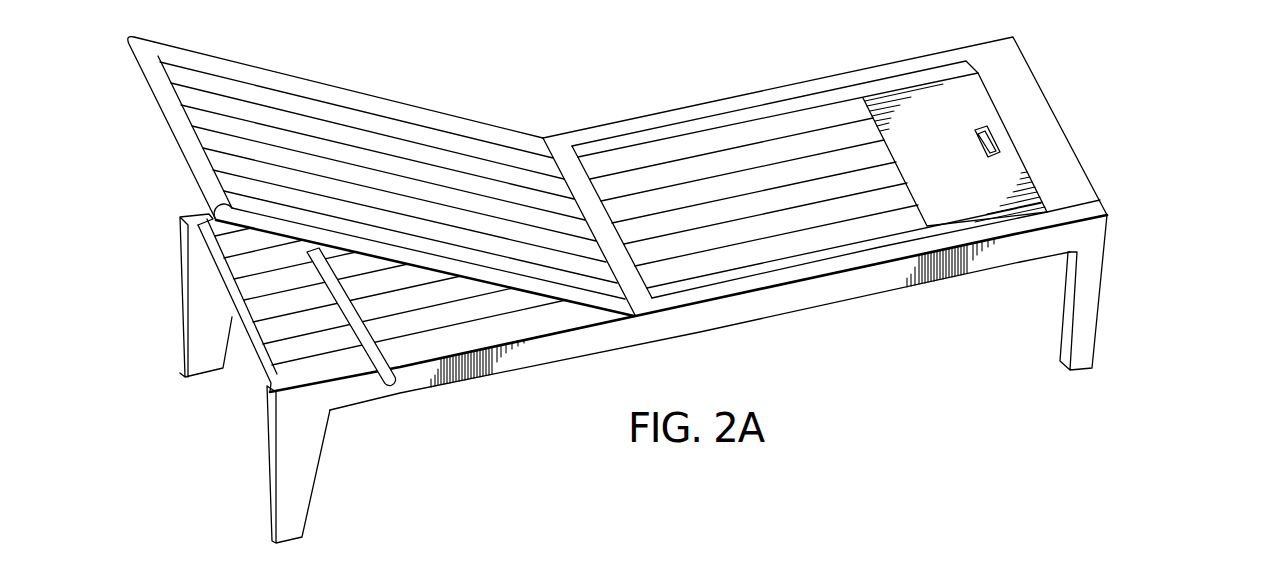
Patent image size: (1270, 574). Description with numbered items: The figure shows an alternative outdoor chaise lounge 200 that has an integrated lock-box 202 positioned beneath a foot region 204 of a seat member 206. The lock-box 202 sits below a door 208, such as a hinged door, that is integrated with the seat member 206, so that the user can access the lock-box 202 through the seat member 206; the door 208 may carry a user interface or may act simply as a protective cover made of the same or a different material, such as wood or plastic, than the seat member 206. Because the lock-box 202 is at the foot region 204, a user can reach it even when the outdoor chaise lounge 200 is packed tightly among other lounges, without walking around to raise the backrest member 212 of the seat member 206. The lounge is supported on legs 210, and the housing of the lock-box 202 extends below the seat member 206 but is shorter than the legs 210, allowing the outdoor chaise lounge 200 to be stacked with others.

The outdoor chaise lounge 200 is at (1190, 190).
The lock-box 202 is at (1041, 146).
The foot region 204 is at (1059, 52).
The seat member 206 is at (745, 132).
The door 208 is at (975, 112).
The legs 210 is at (178, 293).
The backrest member 212 is at (338, 84).